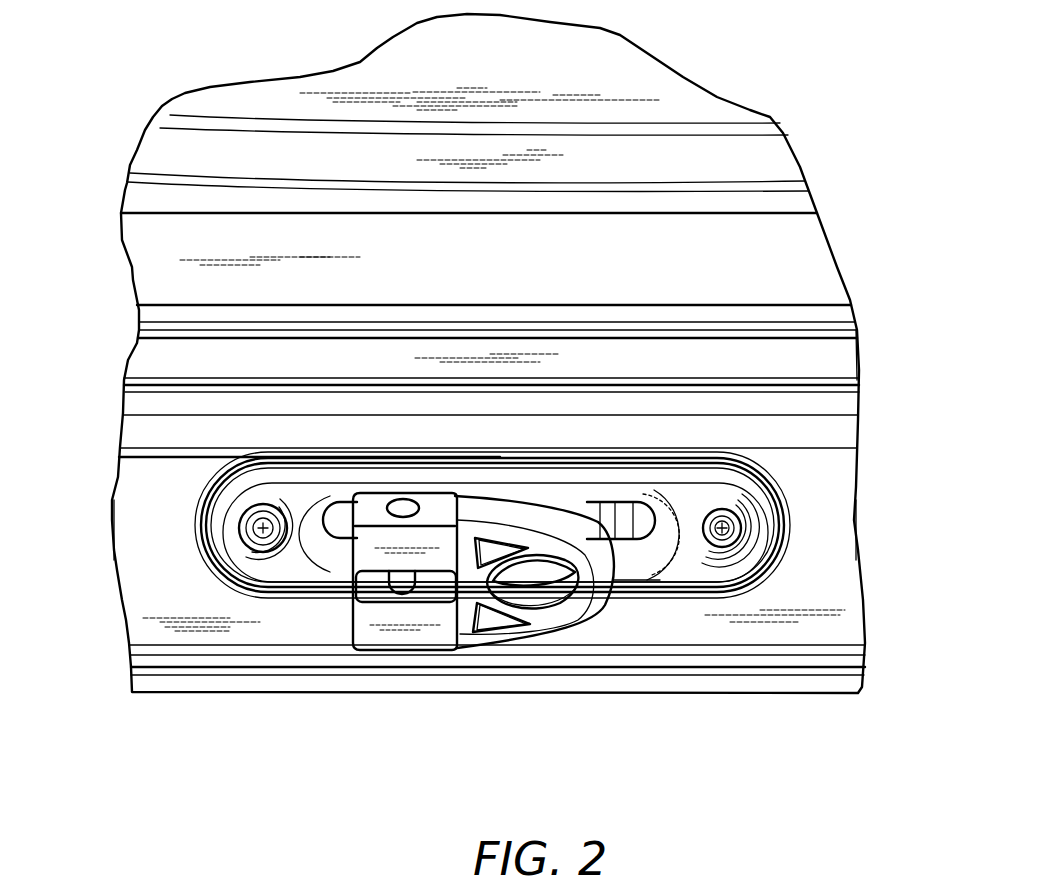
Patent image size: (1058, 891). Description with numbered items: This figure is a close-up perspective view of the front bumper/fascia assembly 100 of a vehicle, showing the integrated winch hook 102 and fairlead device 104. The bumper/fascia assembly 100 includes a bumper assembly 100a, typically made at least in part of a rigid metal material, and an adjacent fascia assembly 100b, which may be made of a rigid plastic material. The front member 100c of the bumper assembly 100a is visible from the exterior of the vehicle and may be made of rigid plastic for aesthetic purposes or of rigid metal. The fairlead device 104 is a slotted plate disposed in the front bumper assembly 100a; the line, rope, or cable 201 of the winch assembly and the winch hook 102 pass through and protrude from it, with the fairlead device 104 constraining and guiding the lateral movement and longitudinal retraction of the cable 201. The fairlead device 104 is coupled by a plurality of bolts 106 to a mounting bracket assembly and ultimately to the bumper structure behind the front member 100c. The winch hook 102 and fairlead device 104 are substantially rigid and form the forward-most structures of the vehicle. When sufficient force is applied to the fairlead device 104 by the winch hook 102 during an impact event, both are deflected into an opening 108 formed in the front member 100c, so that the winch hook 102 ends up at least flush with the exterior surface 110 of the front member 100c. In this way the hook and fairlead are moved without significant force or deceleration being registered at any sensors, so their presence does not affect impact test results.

The front bumper/fascia assembly 100 is at (648, 155).
The bumper assembly 100a is at (140, 533).
The fascia assembly 100b is at (833, 357).
The front member 100c is at (818, 528).
The winch hook 102 is at (463, 633).
The fairlead device 104 is at (652, 553).
The bolts 106 is at (723, 532).
The opening 108 is at (220, 590).
The exterior surface 110 is at (155, 588).
The line, rope, or cable 201 is at (627, 516).